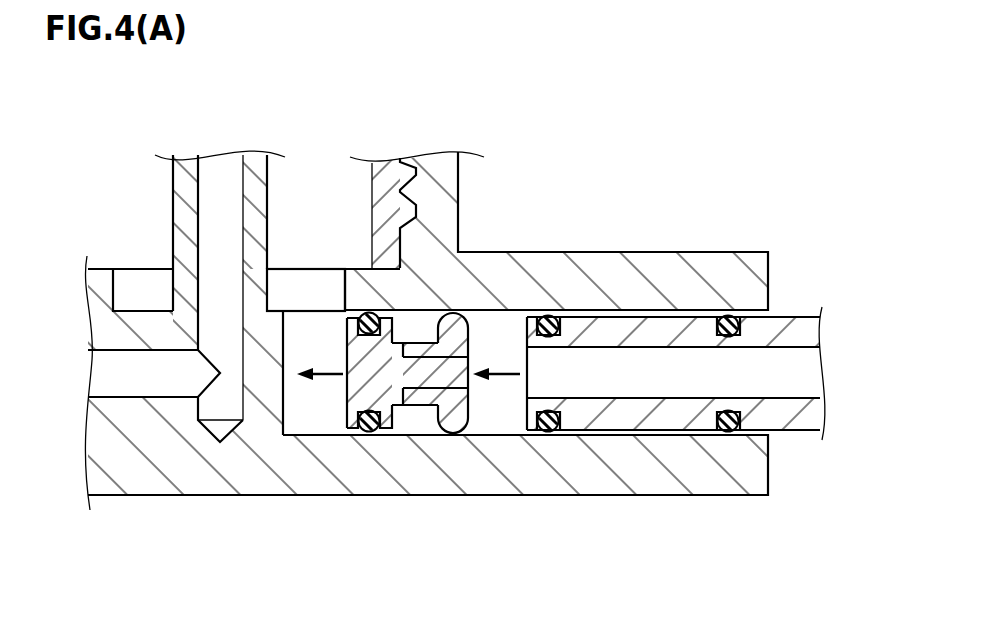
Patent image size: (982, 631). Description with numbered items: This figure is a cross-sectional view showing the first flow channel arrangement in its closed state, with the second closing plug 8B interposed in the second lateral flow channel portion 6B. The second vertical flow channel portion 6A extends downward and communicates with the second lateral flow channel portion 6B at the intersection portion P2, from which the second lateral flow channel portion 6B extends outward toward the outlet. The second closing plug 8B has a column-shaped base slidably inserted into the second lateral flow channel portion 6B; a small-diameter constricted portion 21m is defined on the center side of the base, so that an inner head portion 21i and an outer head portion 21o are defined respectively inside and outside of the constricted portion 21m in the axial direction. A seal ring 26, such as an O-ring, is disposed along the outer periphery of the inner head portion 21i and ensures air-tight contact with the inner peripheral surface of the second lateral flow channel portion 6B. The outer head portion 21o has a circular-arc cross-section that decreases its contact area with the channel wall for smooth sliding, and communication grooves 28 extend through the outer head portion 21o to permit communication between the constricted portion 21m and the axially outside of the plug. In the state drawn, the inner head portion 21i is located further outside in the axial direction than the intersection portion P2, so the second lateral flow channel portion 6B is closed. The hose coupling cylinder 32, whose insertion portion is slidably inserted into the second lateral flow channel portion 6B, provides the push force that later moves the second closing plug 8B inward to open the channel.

The second vertical flow channel portion 6A is at (317, 285).
The second lateral flow channel portion 6B is at (518, 440).
The second closing plug 8B is at (463, 288).
The communication groove 28 is at (452, 355).
The hose coupling cylinder 32 is at (800, 333).
The intersection portion P2 is at (302, 313).
The inner head portion 21i is at (365, 380).
The constricted portion 21m is at (421, 407).
The outer head portion 21o is at (452, 417).
The seal ring 26 is at (366, 430).